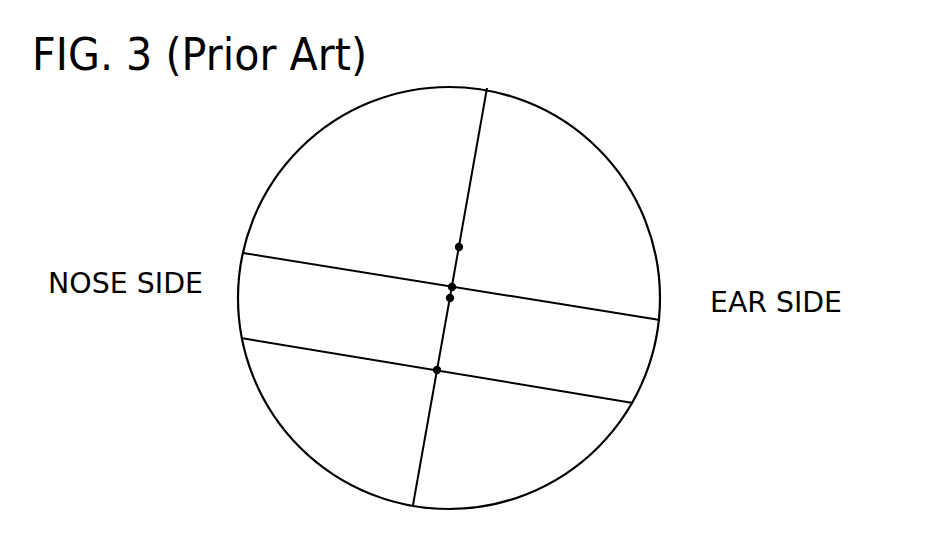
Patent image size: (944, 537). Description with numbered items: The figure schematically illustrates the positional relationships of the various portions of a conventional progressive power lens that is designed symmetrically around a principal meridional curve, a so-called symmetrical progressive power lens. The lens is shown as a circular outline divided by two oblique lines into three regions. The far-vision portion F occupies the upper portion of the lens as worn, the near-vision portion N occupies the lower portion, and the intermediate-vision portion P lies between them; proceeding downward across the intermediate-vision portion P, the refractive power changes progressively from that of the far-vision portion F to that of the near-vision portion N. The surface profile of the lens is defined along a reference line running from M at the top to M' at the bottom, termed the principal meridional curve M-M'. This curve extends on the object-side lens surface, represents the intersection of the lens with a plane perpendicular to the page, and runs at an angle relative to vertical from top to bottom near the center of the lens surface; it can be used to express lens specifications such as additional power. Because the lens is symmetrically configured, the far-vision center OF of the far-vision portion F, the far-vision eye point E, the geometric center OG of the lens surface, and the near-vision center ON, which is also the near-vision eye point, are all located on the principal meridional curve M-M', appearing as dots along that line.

The principal meridional curve (upper end) M is at (480, 177).
The principal meridional curve (lower end) M' is at (422, 417).
The far-vision center OF is at (480, 249).
The far-vision eye point E is at (465, 275).
The geometric center OG is at (472, 311).
The near-vision center ON is at (457, 388).
The far-vision portion F is at (451, 286).
The intermediate-vision portion P is at (437, 370).
The near-vision portion N is at (559, 433).